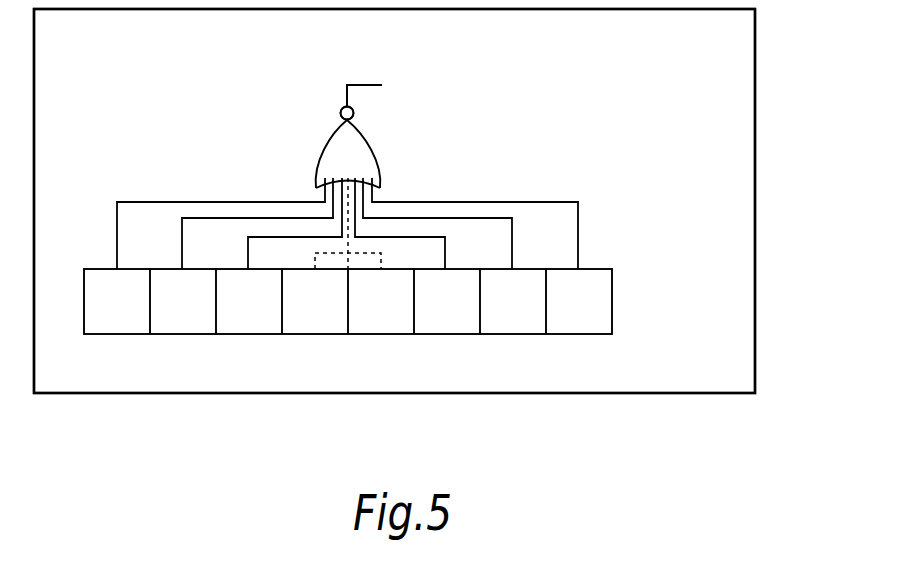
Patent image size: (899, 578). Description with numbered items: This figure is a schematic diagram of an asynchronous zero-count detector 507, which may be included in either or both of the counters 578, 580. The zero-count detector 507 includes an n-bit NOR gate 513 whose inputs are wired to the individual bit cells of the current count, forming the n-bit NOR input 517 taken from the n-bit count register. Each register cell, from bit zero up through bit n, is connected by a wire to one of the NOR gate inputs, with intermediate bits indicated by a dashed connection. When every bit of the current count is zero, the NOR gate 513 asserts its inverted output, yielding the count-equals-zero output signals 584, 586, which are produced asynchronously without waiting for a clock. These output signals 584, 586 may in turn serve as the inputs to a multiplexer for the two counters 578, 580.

The zero-count detector 507 is at (398, 223).
The n-bit NOR gate 513 is at (375, 147).
The n-bit NOR input 517 is at (600, 268).
The counter 578 is at (755, 104).
The counter 580 is at (755, 251).
The output signal 584 is at (346, 95).
The output signal 586 is at (326, 99).